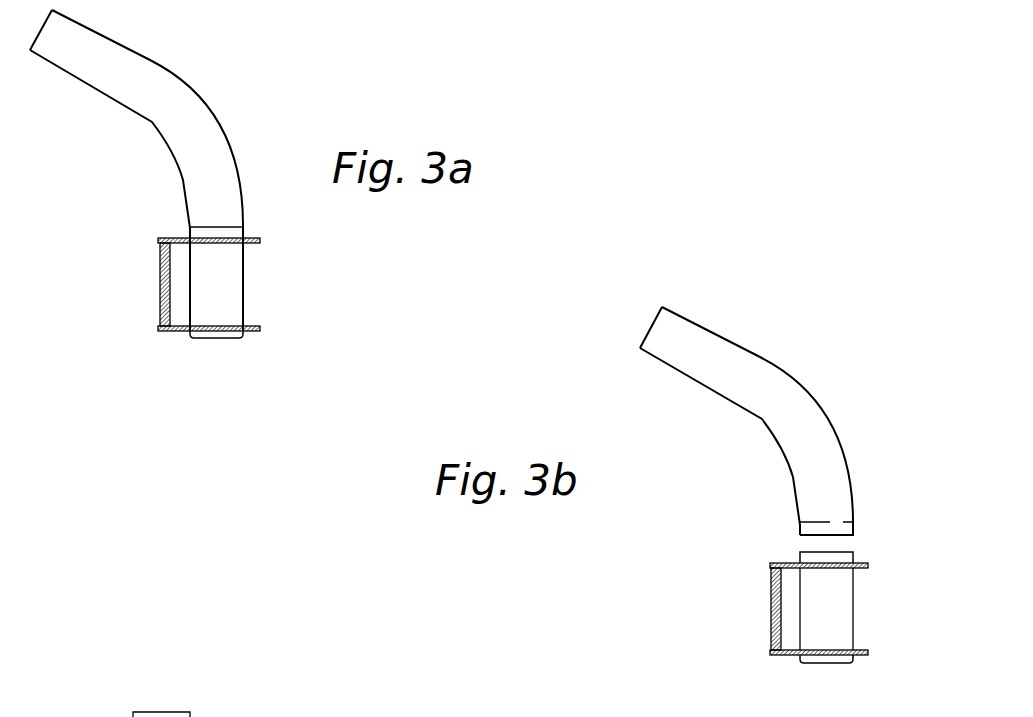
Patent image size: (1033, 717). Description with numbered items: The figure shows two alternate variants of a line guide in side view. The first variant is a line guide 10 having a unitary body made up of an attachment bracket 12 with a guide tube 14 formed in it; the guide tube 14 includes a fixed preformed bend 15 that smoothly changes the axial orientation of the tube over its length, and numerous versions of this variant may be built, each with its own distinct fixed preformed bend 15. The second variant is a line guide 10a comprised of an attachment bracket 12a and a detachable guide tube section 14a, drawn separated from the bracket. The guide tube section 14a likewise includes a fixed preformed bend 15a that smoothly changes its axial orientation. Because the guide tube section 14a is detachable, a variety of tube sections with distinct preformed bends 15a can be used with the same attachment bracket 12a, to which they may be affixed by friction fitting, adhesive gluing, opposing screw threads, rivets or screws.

In FIG. 3A, the line guide 10 is at (220, 63).
In FIG. 3A, the attachment bracket 12 is at (161, 284).
In FIG. 3A, the guide tube 14 is at (200, 135).
In FIG. 3A, the fixed preformed bend 15 is at (110, 190).
In FIG. 3B, the line guide 10a is at (822, 363).
In FIG. 3B, the attachment bracket 12a is at (764, 607).
In FIG. 3B, the detachable guide tube section 14a is at (818, 418).
In FIG. 3B, the fixed preformed bend 15a is at (720, 441).